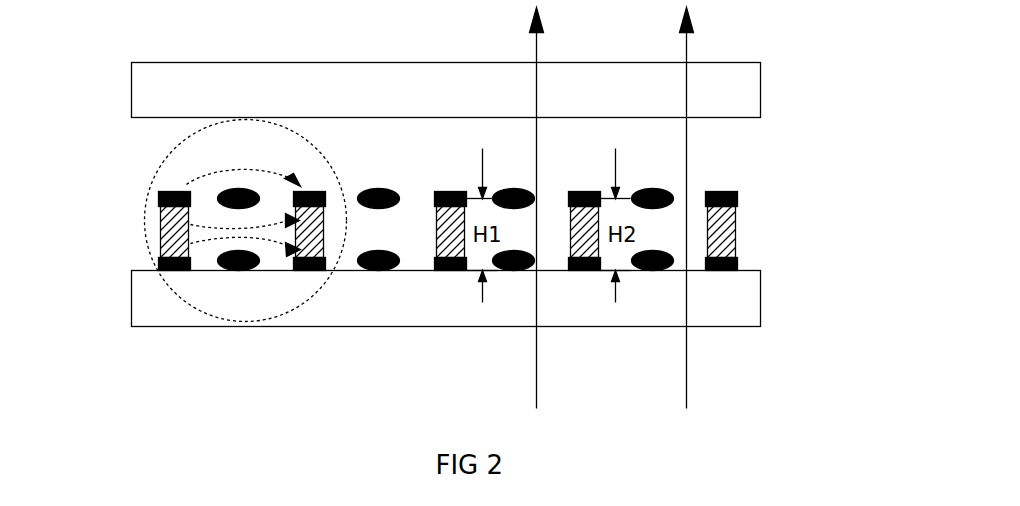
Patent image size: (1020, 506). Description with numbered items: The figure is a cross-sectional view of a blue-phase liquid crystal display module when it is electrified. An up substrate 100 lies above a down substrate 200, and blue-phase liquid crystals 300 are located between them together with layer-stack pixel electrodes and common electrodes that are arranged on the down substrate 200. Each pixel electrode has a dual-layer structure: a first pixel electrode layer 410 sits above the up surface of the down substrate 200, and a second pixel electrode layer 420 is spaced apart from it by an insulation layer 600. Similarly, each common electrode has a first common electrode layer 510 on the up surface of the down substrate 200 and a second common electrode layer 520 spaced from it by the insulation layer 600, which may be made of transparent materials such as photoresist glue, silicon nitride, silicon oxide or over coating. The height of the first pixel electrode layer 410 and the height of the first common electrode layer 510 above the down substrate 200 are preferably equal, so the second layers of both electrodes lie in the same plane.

The up substrate 100 is at (737, 72).
The down substrate 200 is at (732, 312).
The blue-phase liquid crystals 300 is at (652, 271).
The first pixel electrode layer 410 is at (176, 271).
The second pixel electrode layer 420 is at (171, 190).
The first common electrode layer 510 is at (587, 271).
The second common electrode layer 520 is at (306, 191).
The insulation layer 600 is at (168, 240).